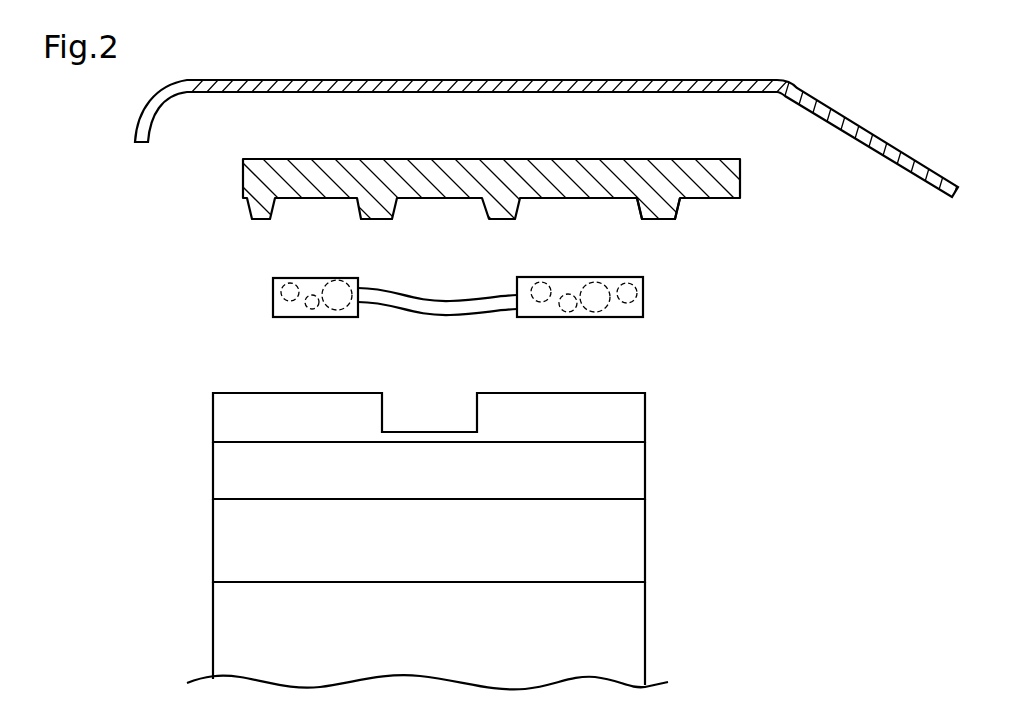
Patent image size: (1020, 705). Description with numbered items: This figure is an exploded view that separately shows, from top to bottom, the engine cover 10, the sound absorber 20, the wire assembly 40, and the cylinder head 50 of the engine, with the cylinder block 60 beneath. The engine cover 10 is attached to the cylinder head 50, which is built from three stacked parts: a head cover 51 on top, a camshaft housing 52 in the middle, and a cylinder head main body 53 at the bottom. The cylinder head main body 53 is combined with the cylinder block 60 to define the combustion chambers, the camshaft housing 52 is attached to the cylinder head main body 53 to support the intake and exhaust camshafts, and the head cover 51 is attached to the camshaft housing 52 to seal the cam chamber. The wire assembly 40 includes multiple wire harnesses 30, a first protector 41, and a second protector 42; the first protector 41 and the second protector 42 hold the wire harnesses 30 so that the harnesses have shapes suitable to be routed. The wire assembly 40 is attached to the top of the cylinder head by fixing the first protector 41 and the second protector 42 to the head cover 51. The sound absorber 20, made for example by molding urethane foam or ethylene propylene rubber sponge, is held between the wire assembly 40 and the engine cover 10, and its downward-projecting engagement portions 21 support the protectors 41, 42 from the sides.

The engine cover 10 is at (676, 77).
The sound absorber 20 is at (713, 198).
The engagement portion 21 is at (677, 217).
The wire harness 30 is at (342, 280).
The wire assembly 40 is at (414, 304).
The first protector 41 is at (585, 318).
The second protector 42 is at (318, 318).
The cylinder head 50 is at (369, 487).
The head cover 51 is at (213, 424).
The camshaft housing 52 is at (213, 466).
The cylinder head main body 53 is at (395, 540).
The cylinder block 60 is at (213, 611).